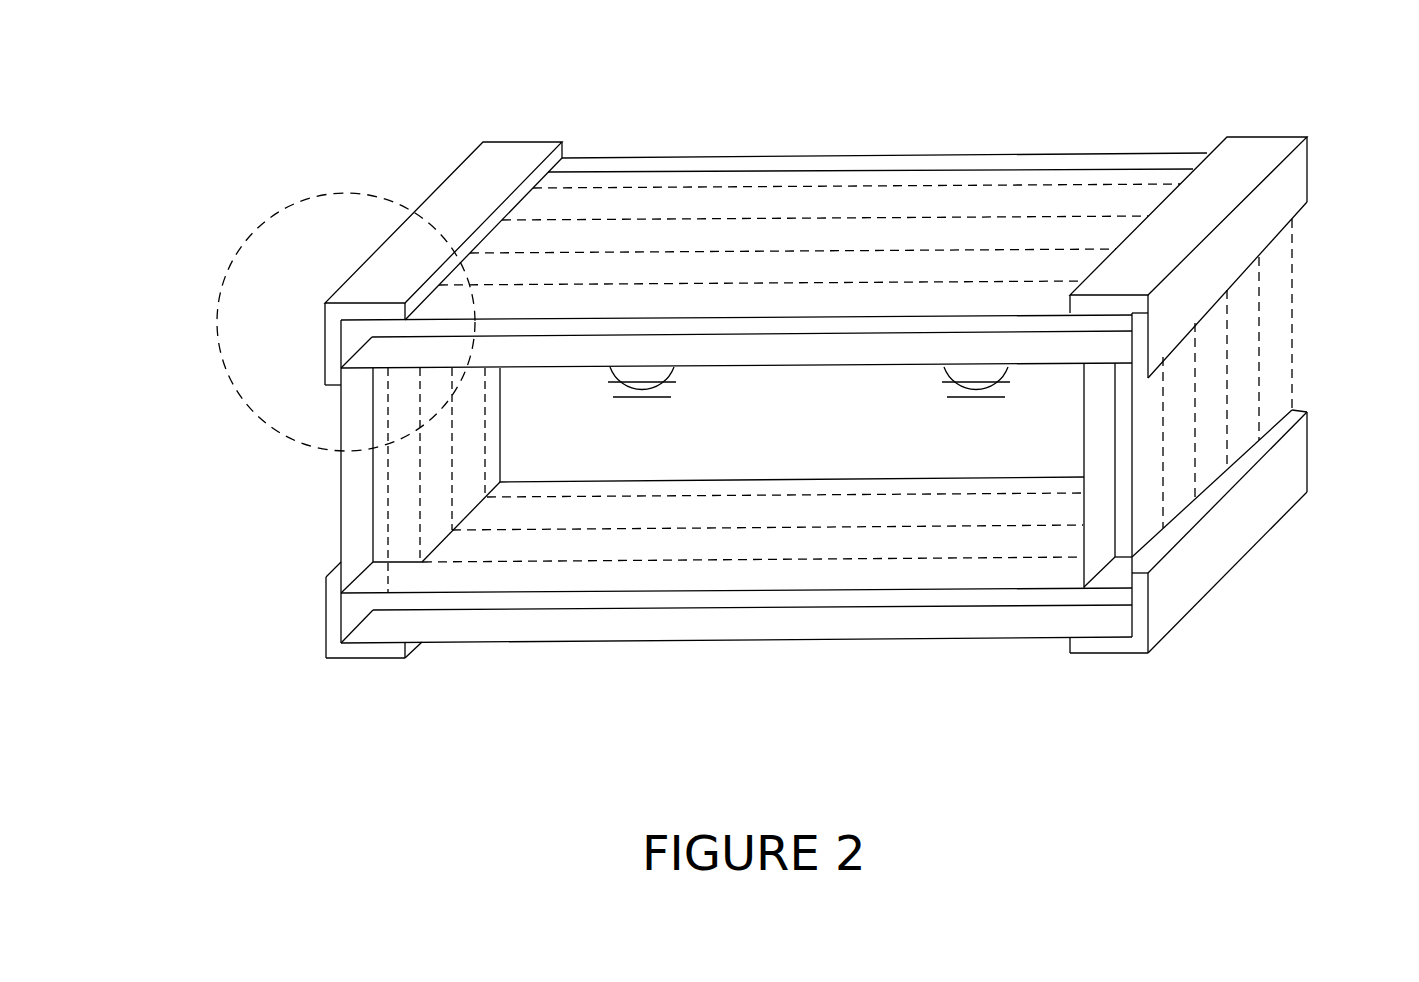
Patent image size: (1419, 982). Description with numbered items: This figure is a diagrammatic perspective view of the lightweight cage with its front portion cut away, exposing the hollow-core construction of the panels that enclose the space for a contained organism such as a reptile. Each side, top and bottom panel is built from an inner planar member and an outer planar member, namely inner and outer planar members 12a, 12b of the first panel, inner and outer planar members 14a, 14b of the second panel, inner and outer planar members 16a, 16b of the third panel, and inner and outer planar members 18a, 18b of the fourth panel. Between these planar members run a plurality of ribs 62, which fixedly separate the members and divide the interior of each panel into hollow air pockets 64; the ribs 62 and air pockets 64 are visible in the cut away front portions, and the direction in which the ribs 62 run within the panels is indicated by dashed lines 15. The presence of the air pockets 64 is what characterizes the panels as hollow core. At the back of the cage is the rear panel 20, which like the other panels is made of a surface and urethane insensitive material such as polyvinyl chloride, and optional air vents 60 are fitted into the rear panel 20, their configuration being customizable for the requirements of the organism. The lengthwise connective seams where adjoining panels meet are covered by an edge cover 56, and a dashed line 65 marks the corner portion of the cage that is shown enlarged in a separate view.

The inner planar member 12a is at (917, 360).
The outer planar member 12b is at (895, 317).
The inner planar member 14a is at (595, 593).
The outer planar member 14b is at (642, 642).
The dashed lines 15 is at (832, 186).
The inner planar member 16a is at (390, 482).
The outer planar member 16b is at (342, 497).
The inner planar member 18a is at (1084, 527).
The outer planar member 18b is at (1132, 443).
The rear panel 20 is at (678, 157).
The edge cover 56 is at (435, 188).
The air vents 60 is at (655, 378).
The ribs 62 is at (802, 333).
The air pockets 64 is at (865, 348).
The dashed line 65 is at (218, 320).